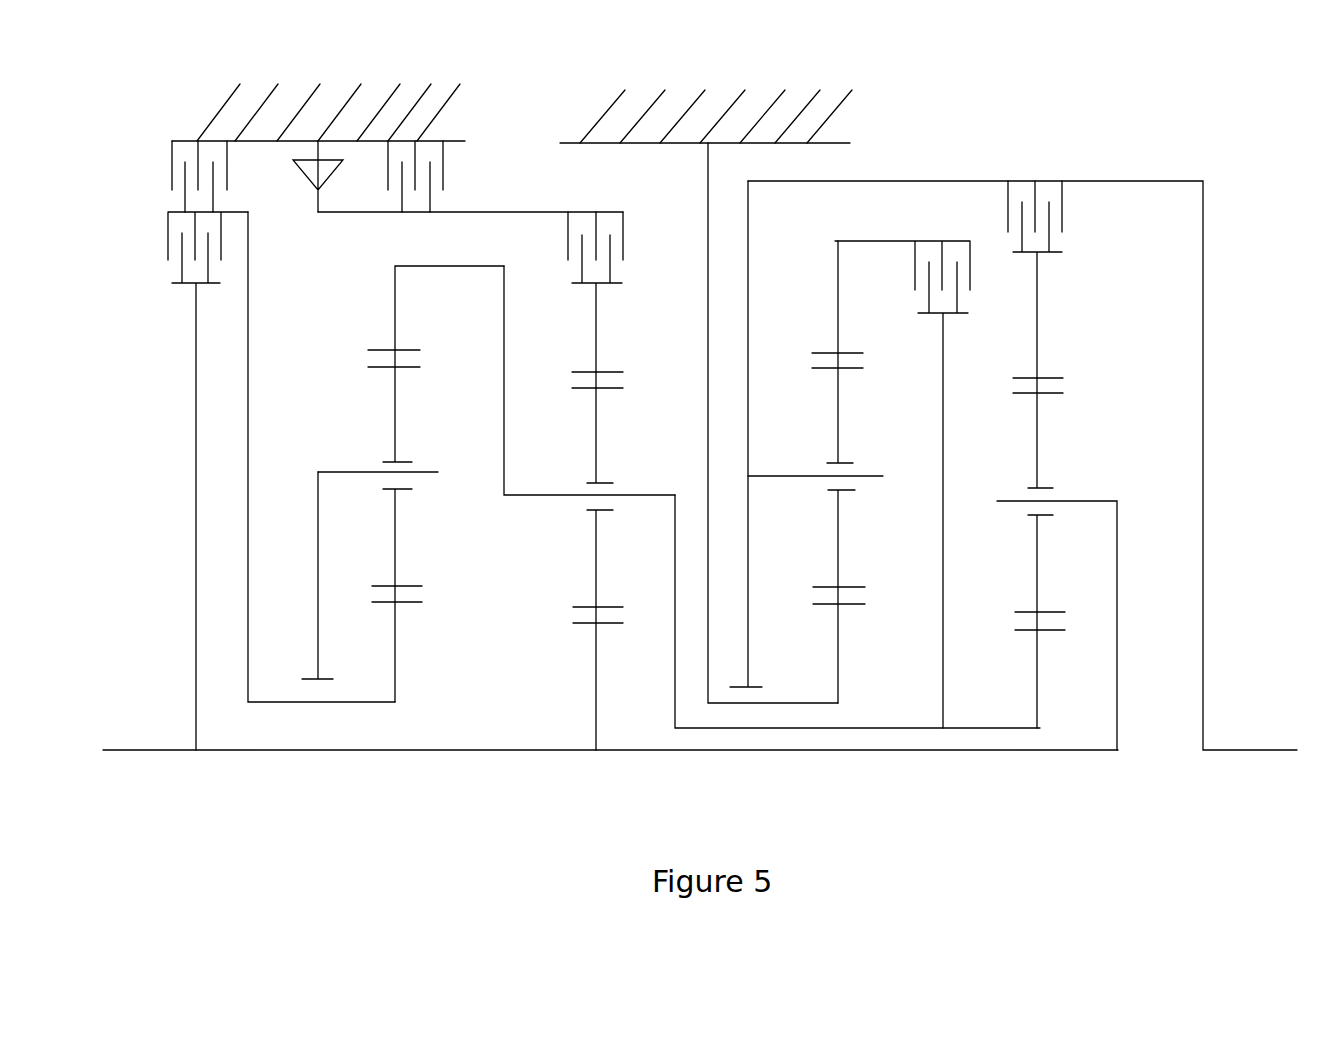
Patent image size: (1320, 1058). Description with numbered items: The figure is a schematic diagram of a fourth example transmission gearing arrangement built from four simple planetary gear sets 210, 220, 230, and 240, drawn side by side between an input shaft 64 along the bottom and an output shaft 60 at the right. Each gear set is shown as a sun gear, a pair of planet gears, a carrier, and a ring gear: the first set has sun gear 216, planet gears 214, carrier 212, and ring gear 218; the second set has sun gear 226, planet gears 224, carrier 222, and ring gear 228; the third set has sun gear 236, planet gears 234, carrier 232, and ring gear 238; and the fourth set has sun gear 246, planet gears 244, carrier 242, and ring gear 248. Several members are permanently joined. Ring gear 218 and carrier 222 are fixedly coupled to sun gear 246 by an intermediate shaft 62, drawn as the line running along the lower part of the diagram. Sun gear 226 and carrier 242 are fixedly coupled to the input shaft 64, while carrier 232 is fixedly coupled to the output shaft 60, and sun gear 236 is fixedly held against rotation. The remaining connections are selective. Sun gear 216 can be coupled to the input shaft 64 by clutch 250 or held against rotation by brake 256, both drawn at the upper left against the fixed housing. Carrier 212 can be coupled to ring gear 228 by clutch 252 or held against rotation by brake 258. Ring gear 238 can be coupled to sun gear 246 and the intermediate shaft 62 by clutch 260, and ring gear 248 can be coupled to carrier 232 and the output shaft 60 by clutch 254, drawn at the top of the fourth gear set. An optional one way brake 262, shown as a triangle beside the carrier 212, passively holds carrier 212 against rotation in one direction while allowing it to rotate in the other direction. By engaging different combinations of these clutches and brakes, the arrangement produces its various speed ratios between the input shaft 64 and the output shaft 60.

The output shaft 60 is at (1263, 752).
The intermediate shaft 62 is at (845, 727).
The input shaft 64 is at (225, 752).
The simple planetary gear set 210 is at (376, 510).
The carrier 212 is at (320, 492).
The planet gears 214 is at (398, 430).
The sun gear 216 is at (393, 640).
The ring gear 218 is at (397, 317).
The simple planetary gear set 220 is at (582, 537).
The carrier 222 is at (522, 497).
The planet gears 224 is at (602, 442).
The sun gear 226 is at (597, 662).
The ring gear 228 is at (598, 338).
The simple planetary gear set 230 is at (817, 494).
The carrier 232 is at (782, 478).
The planet gears 234 is at (842, 423).
The sun gear 236 is at (837, 642).
The ring gear 238 is at (837, 317).
The simple planetary gear set 240 is at (1074, 573).
The carrier 242 is at (1120, 540).
The planet gears 244 is at (1042, 453).
The sun gear 246 is at (1038, 667).
The ring gear 248 is at (1040, 342).
The clutch 250 is at (170, 240).
The clutch 252 is at (585, 213).
The clutch 254 is at (1063, 203).
The brake 256 is at (172, 177).
The brake 258 is at (443, 165).
The clutch 260 is at (950, 241).
The one way brake 262 is at (316, 186).